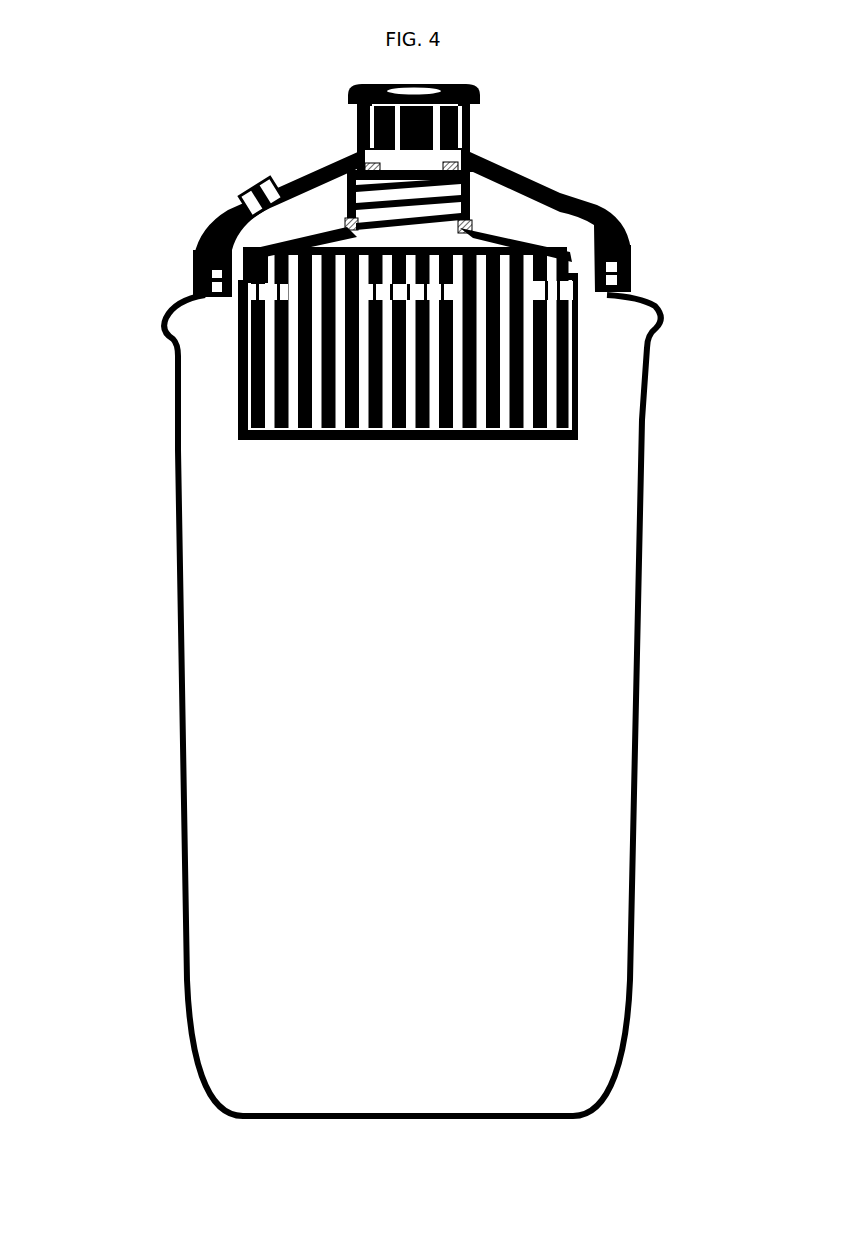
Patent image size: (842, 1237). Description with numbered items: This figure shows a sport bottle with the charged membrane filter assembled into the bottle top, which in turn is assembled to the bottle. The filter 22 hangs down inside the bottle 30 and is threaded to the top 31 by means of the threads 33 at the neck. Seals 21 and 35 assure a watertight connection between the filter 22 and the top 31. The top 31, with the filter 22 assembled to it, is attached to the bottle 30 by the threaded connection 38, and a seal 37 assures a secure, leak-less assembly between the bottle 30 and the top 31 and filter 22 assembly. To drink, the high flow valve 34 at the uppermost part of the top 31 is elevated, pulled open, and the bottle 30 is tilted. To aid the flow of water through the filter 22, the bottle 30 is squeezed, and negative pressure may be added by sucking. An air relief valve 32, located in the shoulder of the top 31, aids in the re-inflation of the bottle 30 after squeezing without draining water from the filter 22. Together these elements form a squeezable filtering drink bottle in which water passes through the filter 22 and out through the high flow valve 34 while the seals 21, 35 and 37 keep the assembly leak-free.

The bottle 30 is at (650, 414).
The filter 22 is at (250, 380).
The high flow valve 34 is at (470, 113).
The seal 35 is at (345, 162).
The top 31 is at (487, 160).
The threads 33 is at (470, 197).
The seal 21 is at (342, 218).
The air relief valve 32 is at (244, 194).
The seal 37 is at (197, 240).
The threaded connection 38 is at (630, 253).